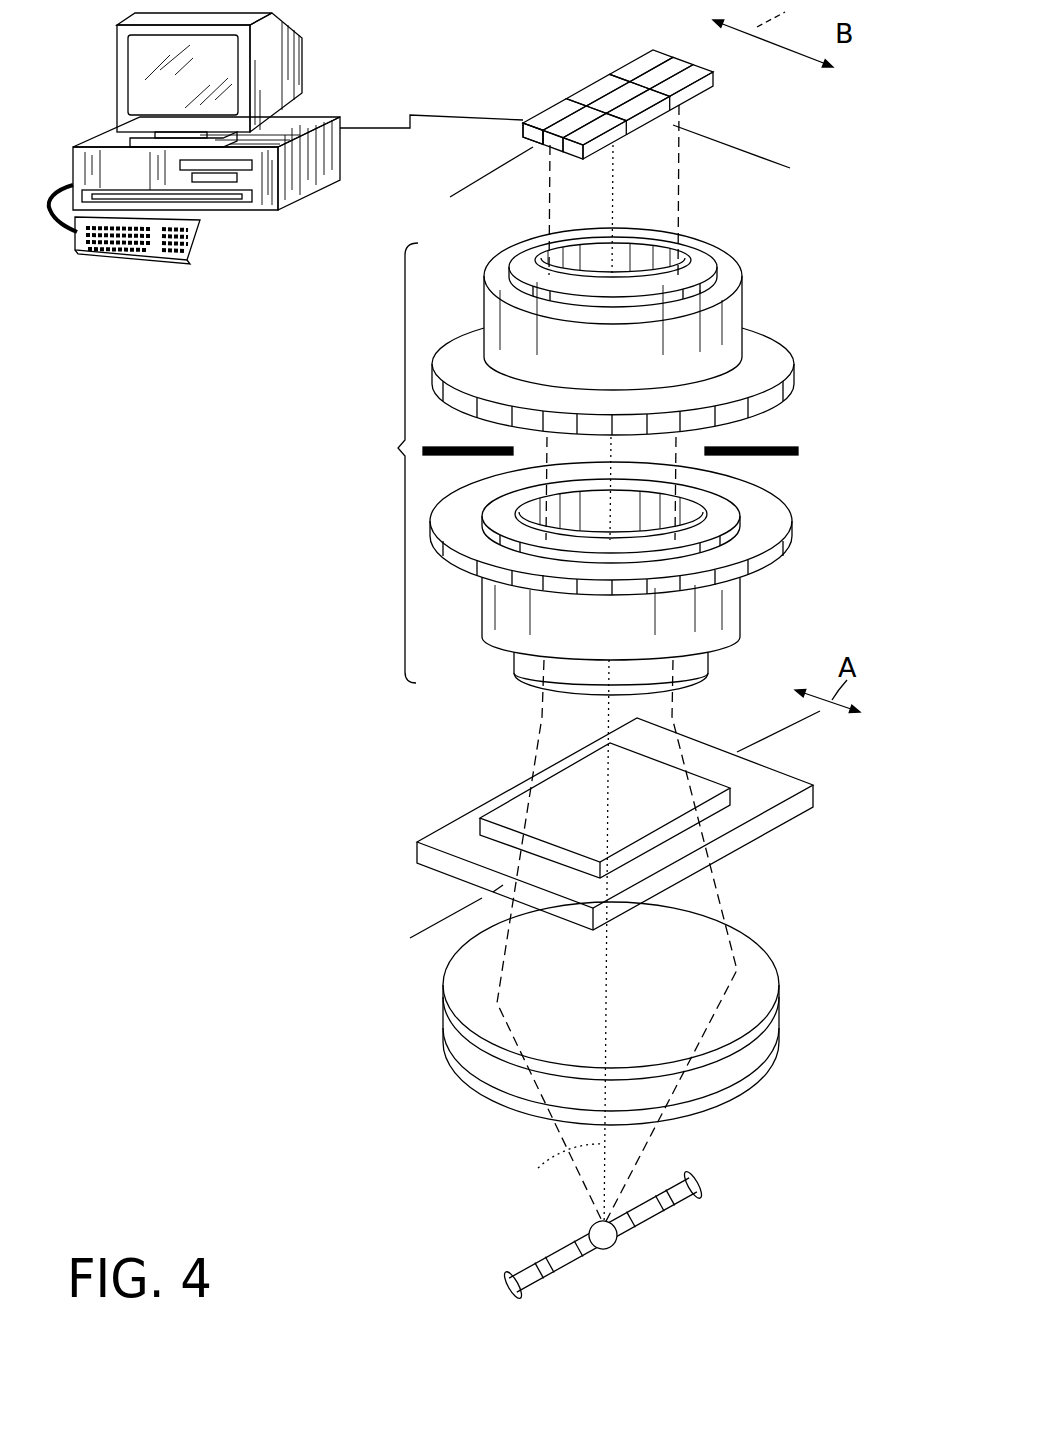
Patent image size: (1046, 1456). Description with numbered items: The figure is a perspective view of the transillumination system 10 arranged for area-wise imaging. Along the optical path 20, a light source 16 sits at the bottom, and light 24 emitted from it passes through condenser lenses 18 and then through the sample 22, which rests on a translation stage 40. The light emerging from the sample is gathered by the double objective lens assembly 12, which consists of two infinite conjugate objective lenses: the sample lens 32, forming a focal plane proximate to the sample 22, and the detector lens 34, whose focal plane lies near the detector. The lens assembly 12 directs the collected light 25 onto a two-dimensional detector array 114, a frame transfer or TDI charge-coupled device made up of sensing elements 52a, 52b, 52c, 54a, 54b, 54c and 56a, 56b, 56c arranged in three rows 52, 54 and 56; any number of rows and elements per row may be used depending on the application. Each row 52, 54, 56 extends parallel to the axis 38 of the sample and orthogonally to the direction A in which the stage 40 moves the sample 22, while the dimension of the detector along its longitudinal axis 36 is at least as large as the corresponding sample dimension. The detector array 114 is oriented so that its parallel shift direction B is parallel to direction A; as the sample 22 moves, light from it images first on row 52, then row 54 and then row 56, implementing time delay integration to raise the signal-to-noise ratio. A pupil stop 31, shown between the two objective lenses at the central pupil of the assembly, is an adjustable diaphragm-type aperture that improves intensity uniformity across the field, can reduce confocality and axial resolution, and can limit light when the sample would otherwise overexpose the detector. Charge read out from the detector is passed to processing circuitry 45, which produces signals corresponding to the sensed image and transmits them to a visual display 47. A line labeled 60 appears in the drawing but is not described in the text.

The transillumination system 10 is at (371, 1247).
The double objective lens assembly 12 is at (387, 463).
The light source 16 is at (672, 1204).
The condenser lenses 18 is at (826, 919).
The optical path 20 is at (553, 1171).
The sample 22 is at (705, 786).
The light 24 is at (714, 920).
The collected light 25 is at (540, 442).
The pupil stop 31 is at (775, 448).
The sample lens 32 is at (482, 600).
The detector lens 34 is at (485, 287).
The longitudinal axis 36 is at (458, 192).
The axis 38 is at (420, 930).
The translation stage 40 is at (813, 795).
The processing circuitry 45 is at (312, 118).
The visual display 47 is at (118, 73).
The row 52 is at (573, 162).
The sensing element 52a is at (592, 127).
The sensing element 52b is at (636, 102).
The sensing element 52c is at (684, 84).
The row 54 is at (546, 144).
The sensing element 54a is at (572, 120).
The sensing element 54b is at (616, 95).
The sensing element 54c is at (665, 70).
The row 56 is at (525, 131).
The sensing element 56a is at (552, 112).
The sensing element 56b is at (596, 88).
The sensing element 56c is at (645, 62).
The scan axis 60 is at (780, 165).
The two-dimensional detector array 114 is at (597, 109).